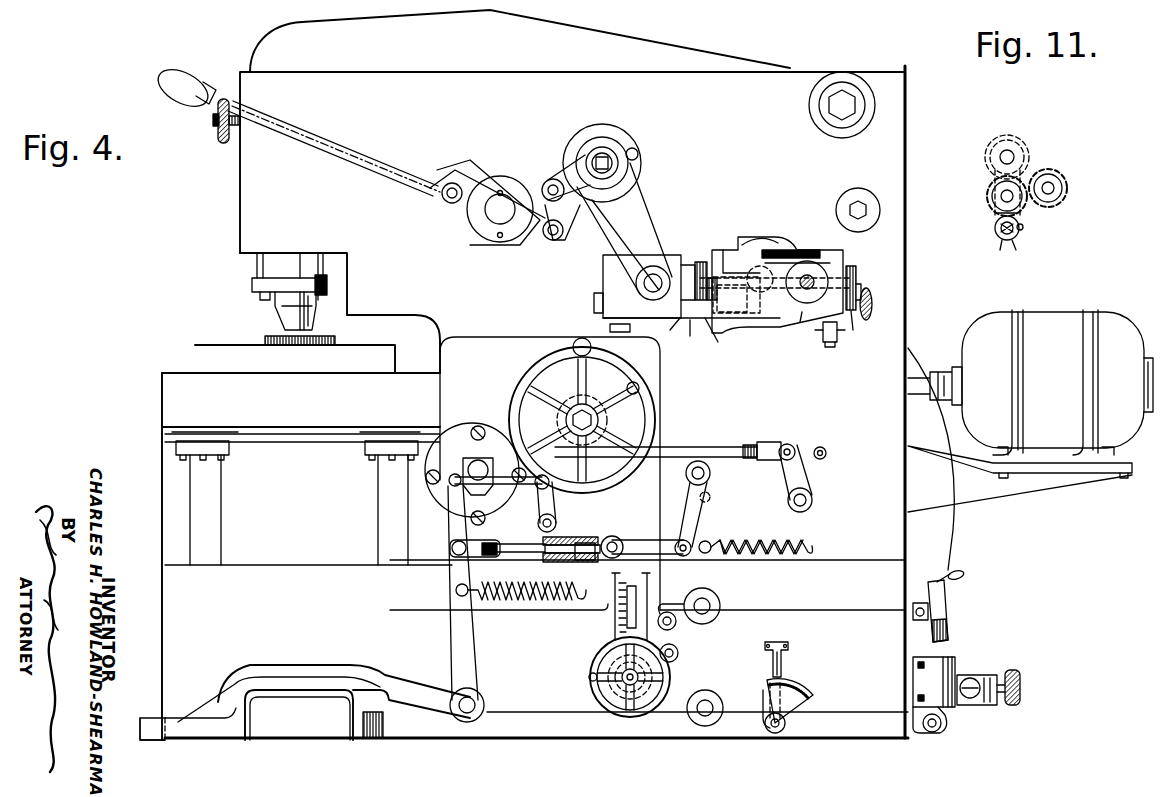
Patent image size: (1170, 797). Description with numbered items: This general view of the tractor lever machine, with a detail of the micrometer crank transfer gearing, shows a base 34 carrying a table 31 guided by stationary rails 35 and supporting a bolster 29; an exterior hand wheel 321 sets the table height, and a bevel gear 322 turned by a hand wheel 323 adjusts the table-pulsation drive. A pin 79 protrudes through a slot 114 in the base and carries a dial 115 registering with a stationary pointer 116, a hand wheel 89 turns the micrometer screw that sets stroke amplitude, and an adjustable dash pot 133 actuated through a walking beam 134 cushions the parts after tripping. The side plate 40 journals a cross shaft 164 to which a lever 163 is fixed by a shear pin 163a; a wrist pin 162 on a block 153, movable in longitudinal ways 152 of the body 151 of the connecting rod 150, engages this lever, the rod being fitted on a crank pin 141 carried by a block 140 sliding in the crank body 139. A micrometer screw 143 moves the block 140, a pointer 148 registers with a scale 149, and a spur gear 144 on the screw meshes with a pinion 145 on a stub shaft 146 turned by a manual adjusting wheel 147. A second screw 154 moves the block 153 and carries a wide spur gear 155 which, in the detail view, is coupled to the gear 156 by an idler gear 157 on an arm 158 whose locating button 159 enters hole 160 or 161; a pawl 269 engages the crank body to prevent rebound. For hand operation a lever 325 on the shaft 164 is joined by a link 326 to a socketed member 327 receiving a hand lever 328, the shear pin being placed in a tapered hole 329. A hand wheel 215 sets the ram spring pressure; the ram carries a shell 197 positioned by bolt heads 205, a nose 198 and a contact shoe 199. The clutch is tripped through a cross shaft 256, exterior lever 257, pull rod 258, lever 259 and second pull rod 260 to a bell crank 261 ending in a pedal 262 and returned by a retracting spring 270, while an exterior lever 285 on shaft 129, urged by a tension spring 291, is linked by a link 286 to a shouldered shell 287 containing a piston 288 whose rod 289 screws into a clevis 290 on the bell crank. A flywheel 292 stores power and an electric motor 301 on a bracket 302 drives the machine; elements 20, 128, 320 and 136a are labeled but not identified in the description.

In FIG. 4, the side plate 40 is at (788, 68).
In FIG. 4, the exterior hand wheel 215 is at (216, 132).
In FIG. 4, the hand lever 328 is at (378, 184).
In FIG. 4, the socketed member 327 is at (513, 245).
In FIG. 4, the lever 325 is at (550, 165).
In FIG. 4, the link 326 is at (560, 220).
In FIG. 4, the tapered hole 329 is at (605, 140).
In FIG. 4, the cross shaft 164 is at (612, 149).
In FIG. 4, the shear pin 163a is at (638, 154).
In FIG. 4, the lever 163 is at (640, 220).
In FIG. 4, the wrist pin 162 is at (638, 283).
In FIG. 4, the block 153 is at (676, 248).
In FIG. 4, the internal longitudinal ways 152 is at (700, 260).
In FIG. 4, the gear 156 is at (712, 276).
In FIG. 11, the gear 156 is at (1028, 163).
In FIG. 4, the crank body 139 is at (790, 322).
In FIG. 4, the connecting rod 150 is at (765, 305).
In FIG. 4, the micrometer screw 143 is at (740, 272).
In FIG. 11, the micrometer screw 143 is at (1029, 152).
In FIG. 4, the cover 136a is at (770, 242).
In FIG. 4, the scale 149 is at (778, 262).
In FIG. 4, the pointer 148 is at (802, 262).
In FIG. 4, the crank pin 141 is at (815, 272).
In FIG. 4, the spur gear 144 is at (851, 265).
In FIG. 4, the stub shaft 146 is at (861, 292).
In FIG. 4, the manual adjusting wheel 147 is at (872, 302).
In FIG. 4, the pinion 145 is at (853, 330).
In FIG. 4, the pawl 269 is at (830, 347).
In FIG. 4, the second screw 154 is at (675, 333).
In FIG. 4, the connecting rod body 151 is at (703, 337).
In FIG. 4, the wide spur gear 155 is at (724, 340).
In FIG. 11, the wide spur gear 155 is at (1064, 176).
In FIG. 4, the block 140 is at (800, 322).
In FIG. 4, the shell 197 is at (252, 283).
In FIG. 4, the heads 205 is at (268, 300).
In FIG. 4, the nose 198 is at (282, 316).
In FIG. 4, the contact shoe 199 is at (308, 325).
In FIG. 4, the work holder 20 is at (336, 342).
In FIG. 4, the bolster 29 is at (382, 352).
In FIG. 4, the table 31 is at (160, 388).
In FIG. 4, the stationary rails 35 is at (213, 516).
In FIG. 4, the base 34 is at (163, 652).
In FIG. 4, the pedal 262 is at (148, 733).
In FIG. 4, the exterior hand wheel 321 is at (616, 370).
In FIG. 4, the hub 320 is at (585, 402).
In FIG. 4, the second pull rod 260 is at (512, 484).
In FIG. 4, the lever 259 is at (556, 507).
In FIG. 4, the bell crank 261 is at (476, 643).
In FIG. 4, the clevis 290 is at (490, 538).
In FIG. 4, the rod 289 is at (520, 556).
In FIG. 4, the internally shouldered shell 287 is at (590, 537).
In FIG. 4, the piston 288 is at (578, 560).
In FIG. 4, the link 286 is at (648, 540).
In FIG. 4, the exterior lever 285 is at (693, 522).
In FIG. 4, the shaft 129 is at (710, 474).
In FIG. 4, the pin 128 is at (712, 497).
In FIG. 4, the tension spring 291 is at (772, 536).
In FIG. 4, the pull rod 258 is at (682, 447).
In FIG. 4, the exterior lever 257 is at (805, 485).
In FIG. 4, the cross shaft 256 is at (808, 508).
In FIG. 4, the retracting spring 270 is at (552, 602).
In FIG. 4, the bevel gear 322 is at (590, 690).
In FIG. 4, the exterior hand wheel 323 is at (670, 680).
In FIG. 4, the stationary pointer 116 is at (783, 665).
In FIG. 4, the dial 115 is at (805, 697).
In FIG. 4, the slot 114 is at (760, 695).
In FIG. 4, the pin 79 is at (780, 735).
In FIG. 4, the flywheel 292 is at (948, 548).
In FIG. 4, the exterior hand wheel 89 is at (948, 612).
In FIG. 4, the adjustable dash pot 133 is at (958, 664).
In FIG. 4, the walking beam 134 is at (920, 735).
In FIG. 4, the electric motor 301 is at (1055, 318).
In FIG. 4, the bracket 302 is at (1025, 492).
In FIG. 11, the idler gear 157 is at (990, 207).
In FIG. 11, the arm 158 is at (998, 233).
In FIG. 11, the hole 160 is at (1023, 227).
In FIG. 11, the locating pin or button 159 is at (1000, 250).
In FIG. 11, the hole 161 is at (1016, 250).